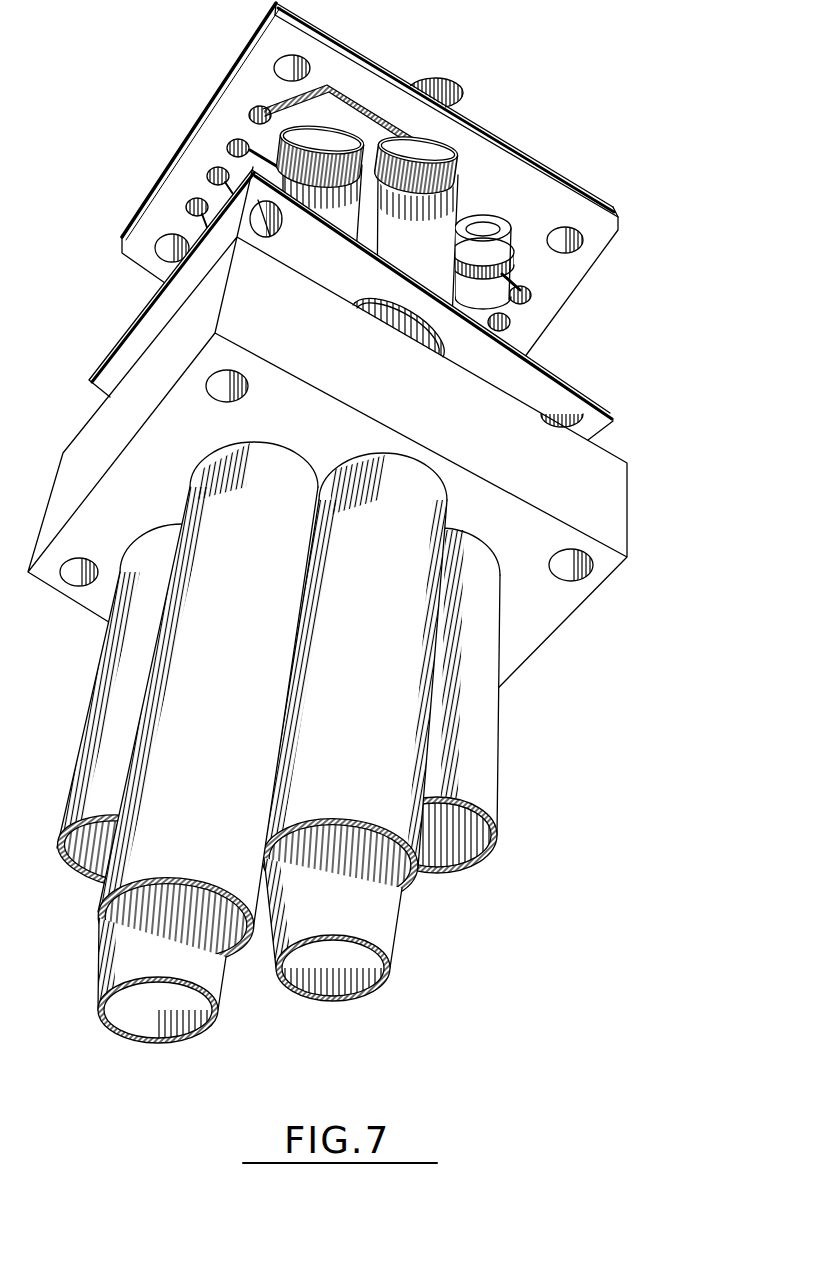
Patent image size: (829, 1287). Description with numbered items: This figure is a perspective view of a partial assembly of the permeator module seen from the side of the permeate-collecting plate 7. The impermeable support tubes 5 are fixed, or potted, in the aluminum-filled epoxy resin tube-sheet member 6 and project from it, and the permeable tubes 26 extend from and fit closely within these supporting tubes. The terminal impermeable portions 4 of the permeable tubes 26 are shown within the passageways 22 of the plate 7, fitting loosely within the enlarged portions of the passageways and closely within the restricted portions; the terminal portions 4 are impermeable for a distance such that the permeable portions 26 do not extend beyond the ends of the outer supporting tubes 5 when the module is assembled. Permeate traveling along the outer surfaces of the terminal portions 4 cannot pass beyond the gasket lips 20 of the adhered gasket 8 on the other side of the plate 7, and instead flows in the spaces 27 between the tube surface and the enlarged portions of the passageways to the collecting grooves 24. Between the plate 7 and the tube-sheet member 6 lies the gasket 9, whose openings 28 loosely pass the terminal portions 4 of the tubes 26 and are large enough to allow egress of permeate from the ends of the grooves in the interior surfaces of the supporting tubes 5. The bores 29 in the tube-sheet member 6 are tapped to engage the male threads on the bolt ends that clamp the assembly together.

The terminal impermeable portions 4 is at (338, 140).
The impermeable support tubes 5 is at (498, 745).
The tube-sheet member 6 is at (632, 522).
The permeate-collecting plate 7 is at (623, 222).
The gasket 8 is at (616, 207).
The gasket 9 is at (615, 412).
The gasket lips 20 is at (465, 246).
The passageways 22 is at (493, 260).
The collecting grooves 24 is at (297, 100).
The permeable tubes 26 is at (437, 231).
The spaces 27 is at (445, 150).
The openings 28 is at (362, 305).
The bores 29 is at (578, 563).